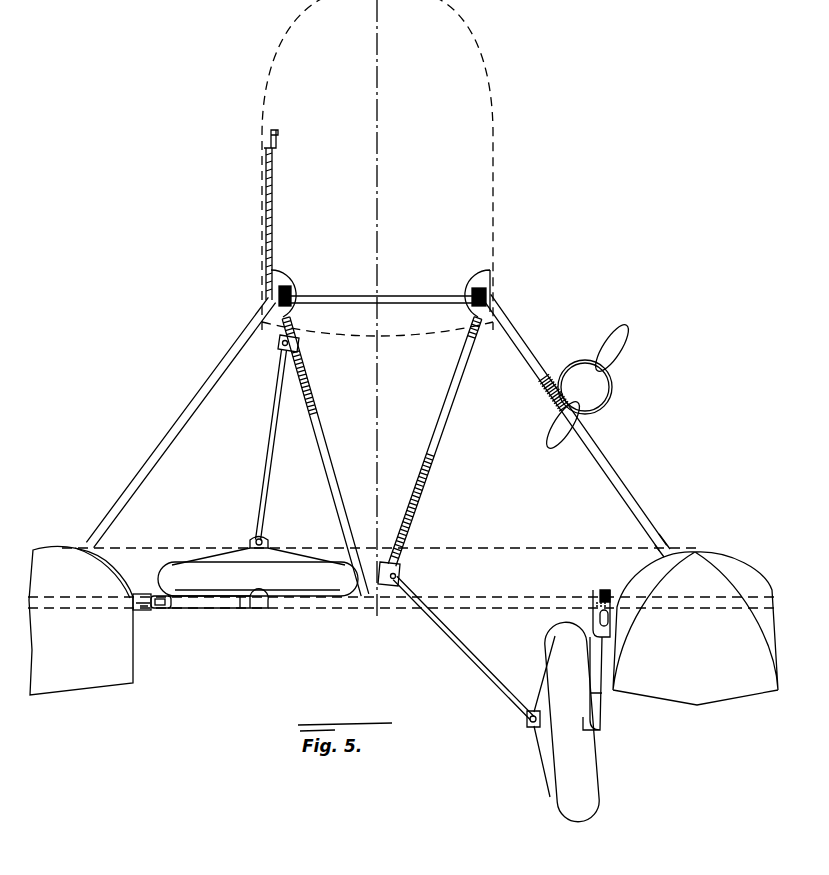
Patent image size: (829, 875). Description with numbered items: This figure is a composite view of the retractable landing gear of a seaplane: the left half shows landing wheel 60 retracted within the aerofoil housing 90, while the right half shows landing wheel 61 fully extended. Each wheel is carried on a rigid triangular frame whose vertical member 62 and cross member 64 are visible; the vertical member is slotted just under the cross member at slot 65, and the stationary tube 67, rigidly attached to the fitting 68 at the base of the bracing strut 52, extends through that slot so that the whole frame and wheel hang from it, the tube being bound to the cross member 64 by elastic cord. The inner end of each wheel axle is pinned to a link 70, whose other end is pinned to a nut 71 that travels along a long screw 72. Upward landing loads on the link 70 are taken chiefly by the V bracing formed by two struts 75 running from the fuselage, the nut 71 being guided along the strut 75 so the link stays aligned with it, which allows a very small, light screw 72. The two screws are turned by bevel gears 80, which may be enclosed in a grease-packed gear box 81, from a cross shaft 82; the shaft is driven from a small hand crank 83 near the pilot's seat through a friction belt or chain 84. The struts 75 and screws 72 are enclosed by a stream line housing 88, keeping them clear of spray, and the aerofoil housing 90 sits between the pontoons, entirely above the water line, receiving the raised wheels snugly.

The strut 52 is at (181, 415).
The landing wheel 60 is at (295, 585).
The landing wheel 61 is at (568, 782).
The vertical member 62 is at (220, 602).
The cross member 64 is at (130, 610).
The slot 65 is at (155, 596).
The stationary tube 67 is at (152, 607).
The fitting 68 is at (105, 557).
The link 70 is at (267, 450).
The nut 71 is at (299, 342).
The screw 72 is at (307, 388).
The strut 75 is at (345, 518).
The bevel gear 80 is at (291, 296).
The gear box 81 is at (283, 278).
The cross shaft 82 is at (355, 300).
The hand crank 83 is at (277, 136).
The friction belt or chain 84 is at (273, 200).
The stream line housing 88 is at (420, 435).
The aerofoil housing 90 is at (503, 557).